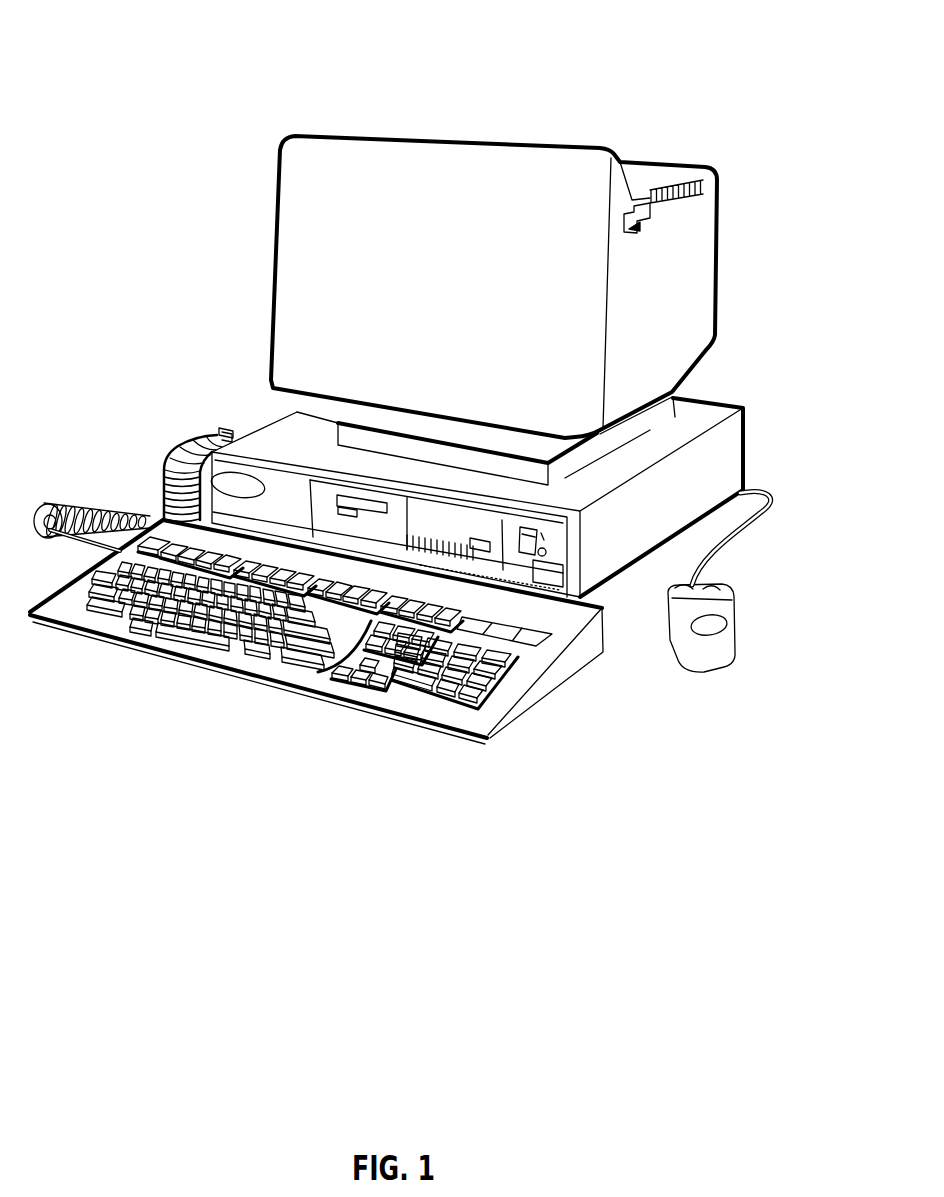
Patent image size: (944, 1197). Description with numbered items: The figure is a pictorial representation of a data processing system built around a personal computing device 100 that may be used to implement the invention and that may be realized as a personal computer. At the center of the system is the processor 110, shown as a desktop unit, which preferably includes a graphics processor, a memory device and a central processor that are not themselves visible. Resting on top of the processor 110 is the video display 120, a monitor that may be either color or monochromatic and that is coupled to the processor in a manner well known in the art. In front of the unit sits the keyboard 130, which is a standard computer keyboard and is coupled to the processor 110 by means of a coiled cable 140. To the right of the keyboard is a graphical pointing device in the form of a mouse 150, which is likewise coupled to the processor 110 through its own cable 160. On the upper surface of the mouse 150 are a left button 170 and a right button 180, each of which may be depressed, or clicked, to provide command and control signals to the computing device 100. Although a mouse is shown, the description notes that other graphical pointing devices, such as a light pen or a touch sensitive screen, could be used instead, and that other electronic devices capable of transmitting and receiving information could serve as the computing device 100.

The computing device 100 is at (597, 115).
The processor 110 is at (730, 442).
The video display 120 is at (273, 267).
The keyboard 130 is at (312, 698).
The cable 140 is at (173, 453).
The mouse 150 is at (717, 658).
The cable 160 is at (745, 537).
The left button 170 is at (660, 600).
The right button 180 is at (717, 590).